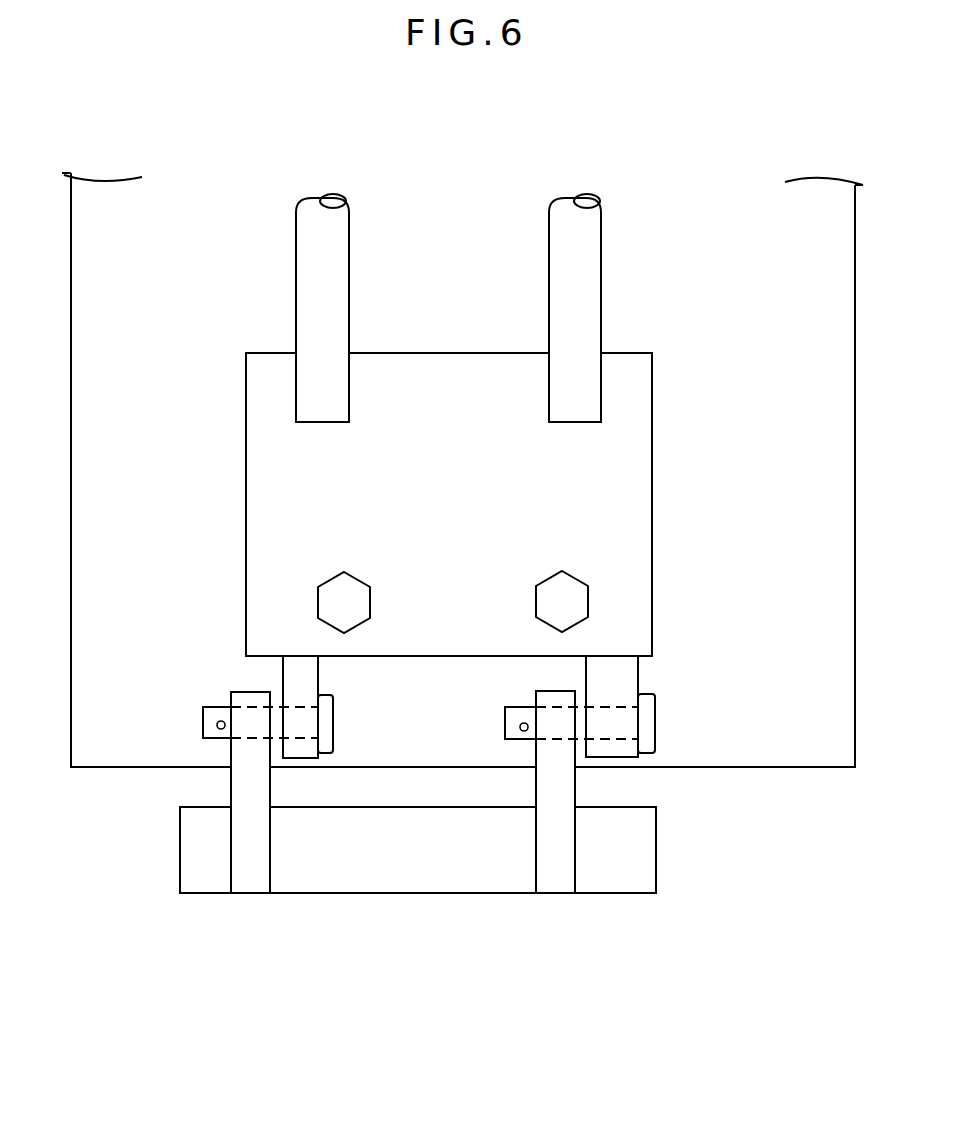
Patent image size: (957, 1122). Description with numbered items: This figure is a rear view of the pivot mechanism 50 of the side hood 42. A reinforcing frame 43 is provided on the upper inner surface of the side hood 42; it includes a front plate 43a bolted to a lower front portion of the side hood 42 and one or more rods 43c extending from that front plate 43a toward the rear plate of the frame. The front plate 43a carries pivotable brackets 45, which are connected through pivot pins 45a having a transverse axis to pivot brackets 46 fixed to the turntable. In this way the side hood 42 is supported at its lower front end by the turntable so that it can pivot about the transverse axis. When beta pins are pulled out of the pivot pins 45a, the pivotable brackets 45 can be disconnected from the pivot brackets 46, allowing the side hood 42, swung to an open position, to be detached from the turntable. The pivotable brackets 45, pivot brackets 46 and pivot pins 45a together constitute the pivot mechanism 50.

The side hood 42 is at (787, 752).
The reinforcing frame 43 is at (528, 425).
The front plate 43a is at (635, 455).
The rods 43c is at (597, 307).
The pivotable brackets 45 is at (598, 679).
The pivot pins 45a is at (510, 722).
The pivot brackets 46 is at (553, 852).
The pivot mechanism 50 is at (440, 898).